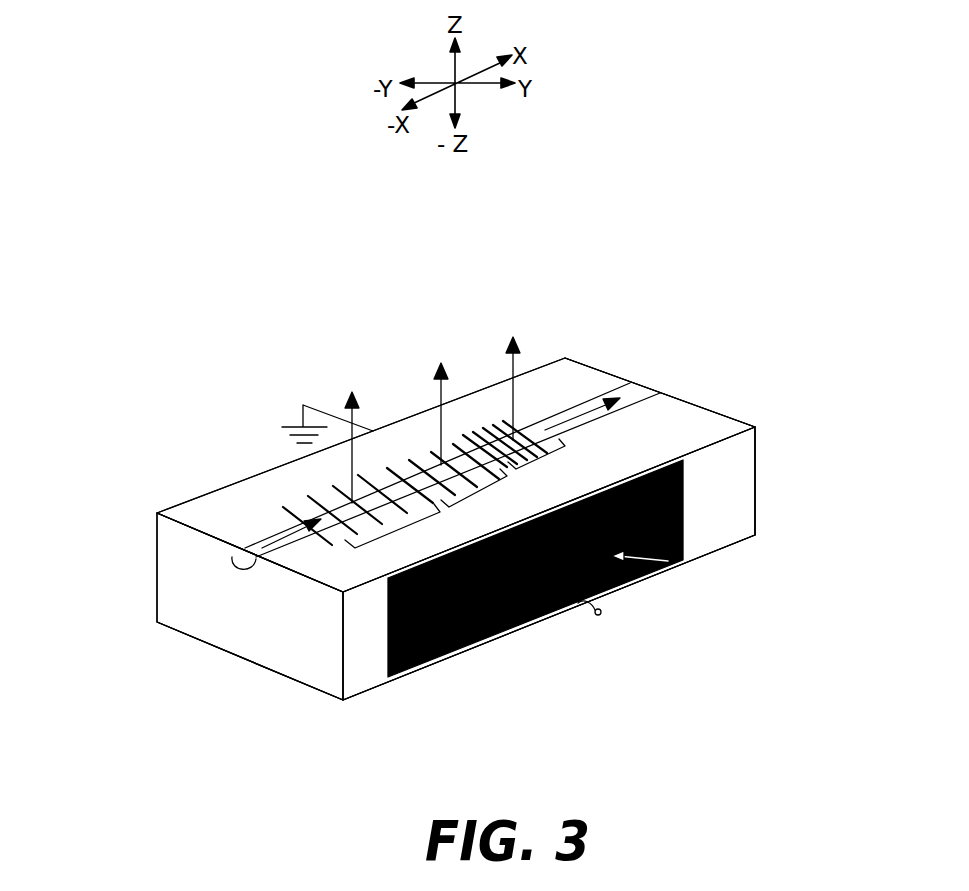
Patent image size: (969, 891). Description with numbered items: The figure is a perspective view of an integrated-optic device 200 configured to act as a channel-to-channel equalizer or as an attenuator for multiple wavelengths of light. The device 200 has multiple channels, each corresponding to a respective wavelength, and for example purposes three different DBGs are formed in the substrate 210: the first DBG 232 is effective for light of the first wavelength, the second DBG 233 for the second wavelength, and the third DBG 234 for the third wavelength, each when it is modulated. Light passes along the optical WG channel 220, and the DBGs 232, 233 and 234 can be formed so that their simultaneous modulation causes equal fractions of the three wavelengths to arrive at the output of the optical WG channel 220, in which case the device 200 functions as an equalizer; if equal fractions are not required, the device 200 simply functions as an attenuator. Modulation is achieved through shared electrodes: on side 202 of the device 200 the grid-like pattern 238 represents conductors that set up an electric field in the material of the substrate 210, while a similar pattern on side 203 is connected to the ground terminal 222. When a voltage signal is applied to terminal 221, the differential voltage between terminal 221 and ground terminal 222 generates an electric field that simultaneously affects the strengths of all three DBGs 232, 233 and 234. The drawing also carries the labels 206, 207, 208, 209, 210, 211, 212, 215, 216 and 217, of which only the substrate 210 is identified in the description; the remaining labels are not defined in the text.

The integrated-optic device 200 is at (742, 212).
The side of the device 202 is at (364, 688).
The side of the device 203 is at (182, 602).
The front side surface 206 is at (296, 663).
The output end face 207 is at (736, 458).
The top surface 208 is at (268, 466).
The rear side surface 209 is at (699, 528).
The substrate 210 is at (157, 512).
The optical waveguide 211 is at (255, 528).
The output light propagation direction 212 is at (585, 398).
The diffracted beam at wavelength lambda 1 215 is at (358, 412).
The diffracted beam at wavelength lambda 2 216 is at (446, 395).
The diffracted beam at wavelength lambda 3 217 is at (518, 362).
The optical WG channel 220 is at (220, 564).
The terminal 221 is at (574, 608).
The ground terminal 222 is at (306, 404).
The first DBG 232 is at (361, 518).
The second DBG 233 is at (454, 482).
The third DBG 234 is at (526, 457).
The grid-like pattern 238 is at (673, 567).